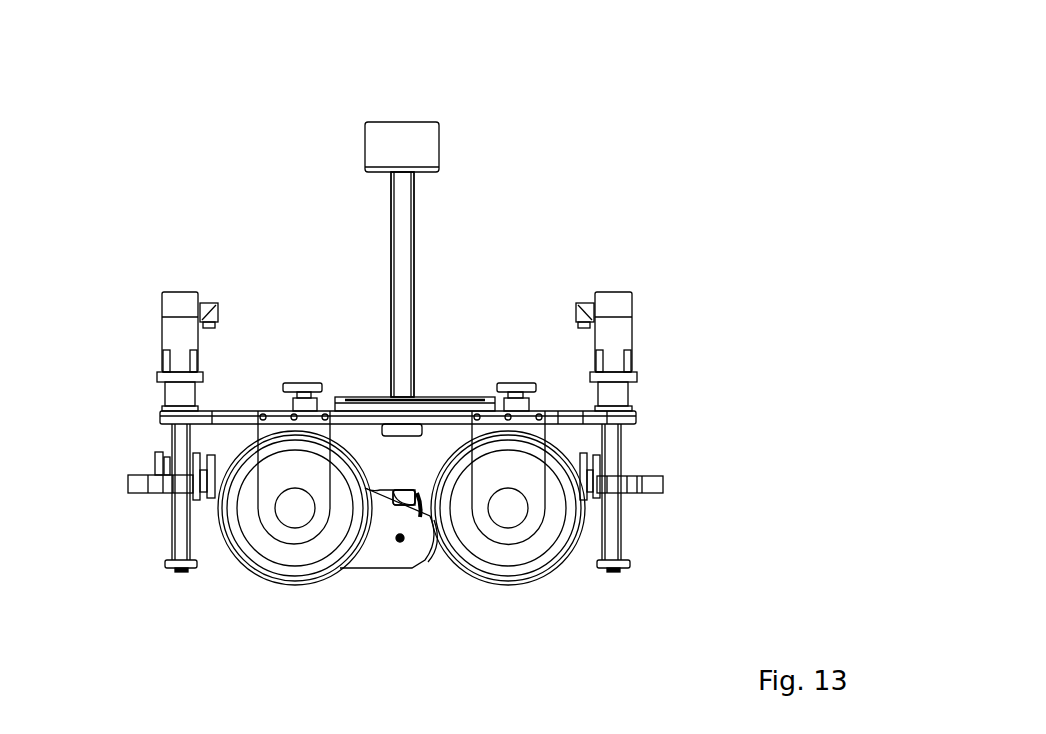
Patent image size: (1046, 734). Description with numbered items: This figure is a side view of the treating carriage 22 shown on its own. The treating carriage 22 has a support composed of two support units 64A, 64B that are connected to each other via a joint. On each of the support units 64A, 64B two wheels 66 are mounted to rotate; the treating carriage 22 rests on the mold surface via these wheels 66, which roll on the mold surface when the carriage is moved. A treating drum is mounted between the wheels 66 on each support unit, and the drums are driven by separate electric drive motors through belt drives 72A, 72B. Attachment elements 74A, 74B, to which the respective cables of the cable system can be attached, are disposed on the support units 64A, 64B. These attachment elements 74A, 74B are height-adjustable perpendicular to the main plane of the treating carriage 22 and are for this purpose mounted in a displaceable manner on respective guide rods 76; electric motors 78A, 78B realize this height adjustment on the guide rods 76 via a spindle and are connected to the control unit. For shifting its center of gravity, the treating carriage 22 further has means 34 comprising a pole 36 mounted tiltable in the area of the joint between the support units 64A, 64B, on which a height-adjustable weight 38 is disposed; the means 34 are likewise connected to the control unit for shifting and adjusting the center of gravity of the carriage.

The treating carriage 22 is at (611, 142).
The means for shifting the center of gravity 34 is at (412, 225).
The pole 36 is at (393, 204).
The height-adjustable weight 38 is at (395, 142).
The support unit 64A is at (283, 472).
The support unit 64B is at (525, 478).
The wheels 66 is at (273, 573).
The belt drive 72A is at (372, 556).
The belt drive 72B is at (442, 564).
The attachment element 74A is at (140, 486).
The attachment element 74B is at (657, 481).
The guide rods 76 is at (177, 528).
The electric motor 78A is at (178, 310).
The electric motor 78B is at (608, 310).